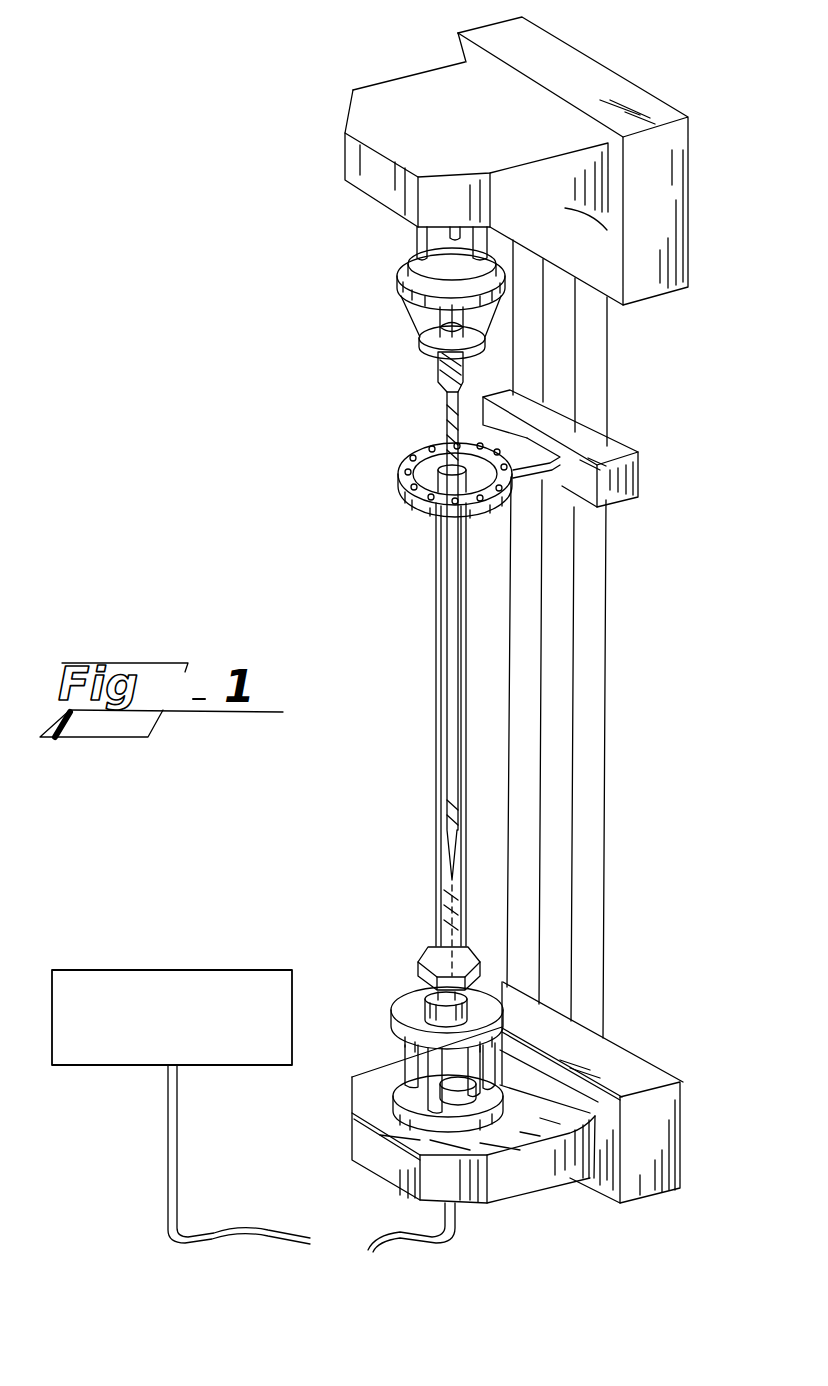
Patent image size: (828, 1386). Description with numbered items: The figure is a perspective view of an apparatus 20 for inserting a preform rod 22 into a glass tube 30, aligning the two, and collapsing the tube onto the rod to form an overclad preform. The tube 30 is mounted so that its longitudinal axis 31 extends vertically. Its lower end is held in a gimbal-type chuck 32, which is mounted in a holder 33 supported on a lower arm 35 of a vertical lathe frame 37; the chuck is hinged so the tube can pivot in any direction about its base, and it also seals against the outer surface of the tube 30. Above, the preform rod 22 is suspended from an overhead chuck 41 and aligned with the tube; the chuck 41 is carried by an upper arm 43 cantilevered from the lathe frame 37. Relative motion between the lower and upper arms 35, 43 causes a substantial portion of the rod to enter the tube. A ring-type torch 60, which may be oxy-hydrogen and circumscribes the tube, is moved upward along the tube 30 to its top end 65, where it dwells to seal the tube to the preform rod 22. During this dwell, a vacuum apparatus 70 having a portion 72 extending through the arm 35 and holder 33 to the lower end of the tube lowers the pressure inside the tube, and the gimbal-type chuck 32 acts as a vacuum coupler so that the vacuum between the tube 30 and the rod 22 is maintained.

The apparatus 20 is at (236, 572).
The preform rod 22 is at (447, 415).
The tube 30 is at (433, 878).
The longitudinal axis 31 is at (450, 909).
The gimbal-type chuck 32 is at (423, 1005).
The holder 33 is at (400, 1103).
The lower arm 35 is at (518, 1187).
The vertical lathe frame 37 is at (660, 1067).
The overhead chuck 41 is at (418, 322).
The upper arm 43 is at (388, 97).
The ring-type torch 60 is at (417, 508).
The top end 65 is at (437, 471).
The apparatus 70 is at (219, 962).
The portion 72 is at (162, 1180).